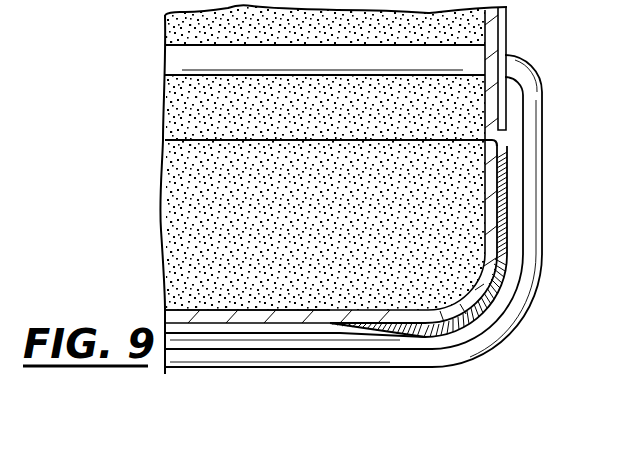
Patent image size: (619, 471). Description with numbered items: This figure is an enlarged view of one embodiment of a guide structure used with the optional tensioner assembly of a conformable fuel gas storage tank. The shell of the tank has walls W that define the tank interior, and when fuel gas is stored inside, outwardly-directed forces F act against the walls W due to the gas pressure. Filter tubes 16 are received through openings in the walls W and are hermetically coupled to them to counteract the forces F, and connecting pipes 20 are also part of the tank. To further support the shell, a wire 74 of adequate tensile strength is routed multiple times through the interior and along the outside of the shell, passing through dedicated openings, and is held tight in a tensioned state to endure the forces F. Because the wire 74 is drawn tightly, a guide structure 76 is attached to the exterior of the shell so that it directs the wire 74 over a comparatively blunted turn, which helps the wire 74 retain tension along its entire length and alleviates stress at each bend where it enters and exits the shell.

The filter tubes 16 is at (293, 90).
The wire 74 is at (325, 143).
The guide structures 76 is at (477, 327).
The connecting pipes 20 is at (386, 374).
The walls W is at (240, 323).
The forces F is at (470, 158).